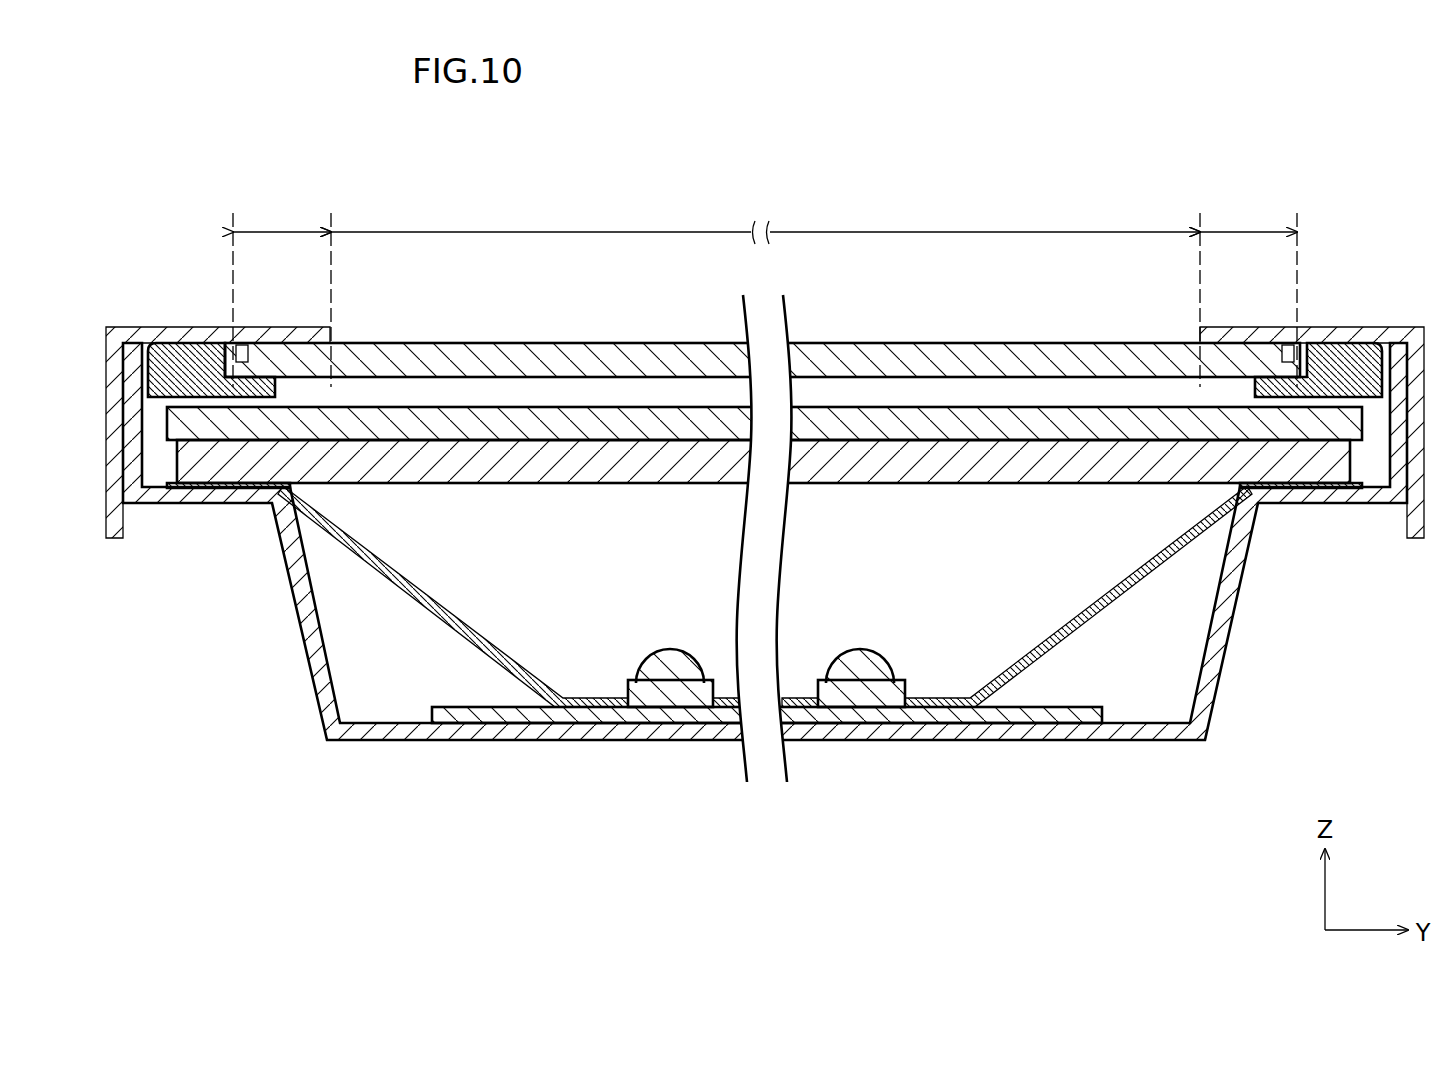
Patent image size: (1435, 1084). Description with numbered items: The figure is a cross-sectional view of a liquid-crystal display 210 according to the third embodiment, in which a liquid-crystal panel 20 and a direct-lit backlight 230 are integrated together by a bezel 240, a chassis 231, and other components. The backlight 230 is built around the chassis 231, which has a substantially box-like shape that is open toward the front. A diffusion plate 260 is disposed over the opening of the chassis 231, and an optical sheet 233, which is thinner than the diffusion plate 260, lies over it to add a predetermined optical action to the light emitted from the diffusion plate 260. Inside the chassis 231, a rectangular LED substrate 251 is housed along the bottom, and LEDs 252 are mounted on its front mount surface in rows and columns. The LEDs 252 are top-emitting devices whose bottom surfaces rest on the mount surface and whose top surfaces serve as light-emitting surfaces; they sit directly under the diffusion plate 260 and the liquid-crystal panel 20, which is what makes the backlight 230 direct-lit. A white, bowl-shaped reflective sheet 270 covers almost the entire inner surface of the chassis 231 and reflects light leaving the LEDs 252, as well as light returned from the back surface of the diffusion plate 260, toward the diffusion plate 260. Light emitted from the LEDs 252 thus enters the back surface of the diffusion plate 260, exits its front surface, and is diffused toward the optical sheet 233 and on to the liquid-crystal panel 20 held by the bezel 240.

The liquid-crystal display 210 is at (738, 146).
The liquid-crystal panel 20 is at (290, 357).
The bezel 240 is at (1320, 337).
The direct-lit backlight 230 is at (765, 602).
The chassis 231 is at (992, 733).
The optical sheet 233 is at (1063, 425).
The diffusion plate 260 is at (1125, 462).
The reflective sheet 270 is at (1186, 535).
The LED substrate 251 is at (928, 715).
The LEDs 252 is at (766, 730).